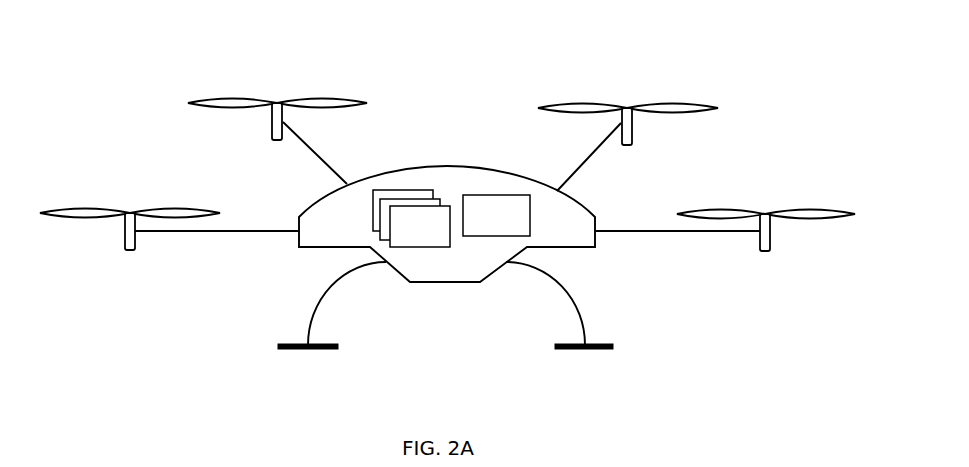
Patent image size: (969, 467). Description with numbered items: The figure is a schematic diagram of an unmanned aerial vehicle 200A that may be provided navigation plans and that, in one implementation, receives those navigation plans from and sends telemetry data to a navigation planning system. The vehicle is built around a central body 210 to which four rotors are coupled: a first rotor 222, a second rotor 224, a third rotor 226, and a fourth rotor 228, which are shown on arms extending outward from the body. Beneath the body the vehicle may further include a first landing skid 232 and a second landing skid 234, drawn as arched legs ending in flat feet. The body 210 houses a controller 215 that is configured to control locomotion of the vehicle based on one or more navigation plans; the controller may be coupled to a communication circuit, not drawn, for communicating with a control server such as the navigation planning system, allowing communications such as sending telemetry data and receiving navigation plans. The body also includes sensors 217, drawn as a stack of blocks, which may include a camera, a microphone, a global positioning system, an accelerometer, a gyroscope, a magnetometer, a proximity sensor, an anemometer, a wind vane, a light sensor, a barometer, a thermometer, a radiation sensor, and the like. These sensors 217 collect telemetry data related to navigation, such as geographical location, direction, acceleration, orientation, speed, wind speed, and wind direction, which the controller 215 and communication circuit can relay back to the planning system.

The unmanned aerial vehicle 200A is at (423, 44).
The body 210 is at (405, 167).
The controller 215 is at (512, 221).
The sensors 217 is at (436, 233).
The first rotor 222 is at (125, 242).
The second rotor 224 is at (272, 128).
The third rotor 226 is at (632, 134).
The fourth rotor 228 is at (770, 240).
The first landing skid 232 is at (326, 308).
The second landing skid 234 is at (566, 308).